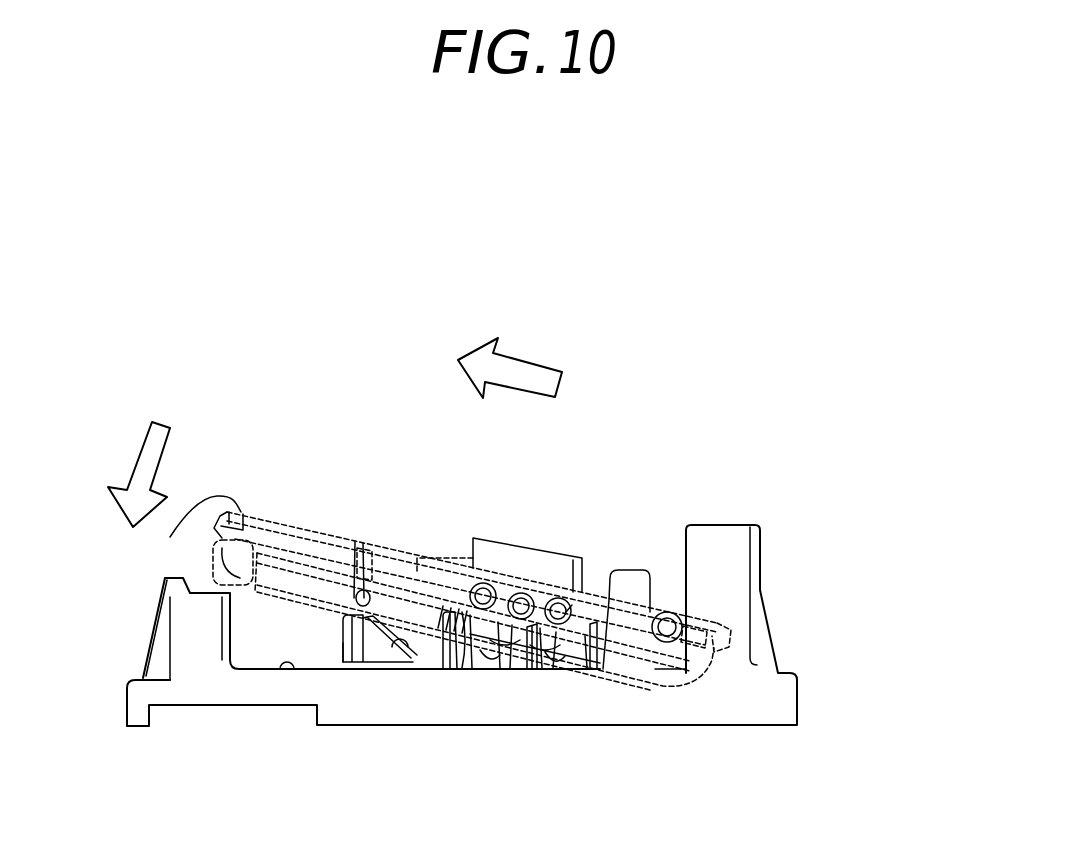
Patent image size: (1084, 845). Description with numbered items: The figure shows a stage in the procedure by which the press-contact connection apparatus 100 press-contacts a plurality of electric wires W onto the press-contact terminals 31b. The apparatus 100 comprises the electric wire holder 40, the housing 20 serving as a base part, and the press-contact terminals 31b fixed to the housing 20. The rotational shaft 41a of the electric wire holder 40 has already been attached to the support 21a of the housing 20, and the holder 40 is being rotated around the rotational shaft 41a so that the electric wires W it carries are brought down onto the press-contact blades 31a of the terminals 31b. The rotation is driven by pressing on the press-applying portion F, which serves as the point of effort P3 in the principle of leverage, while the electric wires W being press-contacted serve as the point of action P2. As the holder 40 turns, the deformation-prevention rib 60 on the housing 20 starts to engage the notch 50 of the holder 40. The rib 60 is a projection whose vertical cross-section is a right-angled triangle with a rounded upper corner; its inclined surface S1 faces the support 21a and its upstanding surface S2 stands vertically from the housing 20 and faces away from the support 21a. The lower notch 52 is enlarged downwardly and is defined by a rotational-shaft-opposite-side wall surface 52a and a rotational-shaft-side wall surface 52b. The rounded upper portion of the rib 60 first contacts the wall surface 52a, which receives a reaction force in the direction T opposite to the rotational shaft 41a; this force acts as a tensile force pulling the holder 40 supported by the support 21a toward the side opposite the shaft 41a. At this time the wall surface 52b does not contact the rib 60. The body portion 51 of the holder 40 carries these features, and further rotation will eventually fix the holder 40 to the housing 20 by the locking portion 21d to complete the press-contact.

The press-contact connection apparatus 100 is at (530, 288).
The housing 20 is at (825, 697).
The support 21a is at (742, 554).
The locking portion 21d is at (165, 594).
The press-contact blade 31a is at (610, 577).
The press-contact terminal 31b is at (540, 666).
The electric wire holder 40 is at (392, 477).
The rotational shaft 41a is at (687, 672).
The notch 50 is at (390, 531).
The slider body 51 is at (402, 558).
The lower notch 52 is at (354, 592).
The rotational-shaft-opposite-side wall surface 52a is at (365, 578).
The rotational-shaft-side wall surface 52b is at (410, 628).
The deformation-prevention rib 60 is at (368, 655).
The electric wires W is at (575, 607).
The direction opposite to the rotational shaft T is at (530, 363).
The press-applying portion F is at (241, 509).
The point of action P2 is at (572, 610).
The point of effort P3 is at (188, 532).
The inclined surface S1 is at (417, 632).
The upstanding surface S2 is at (343, 645).